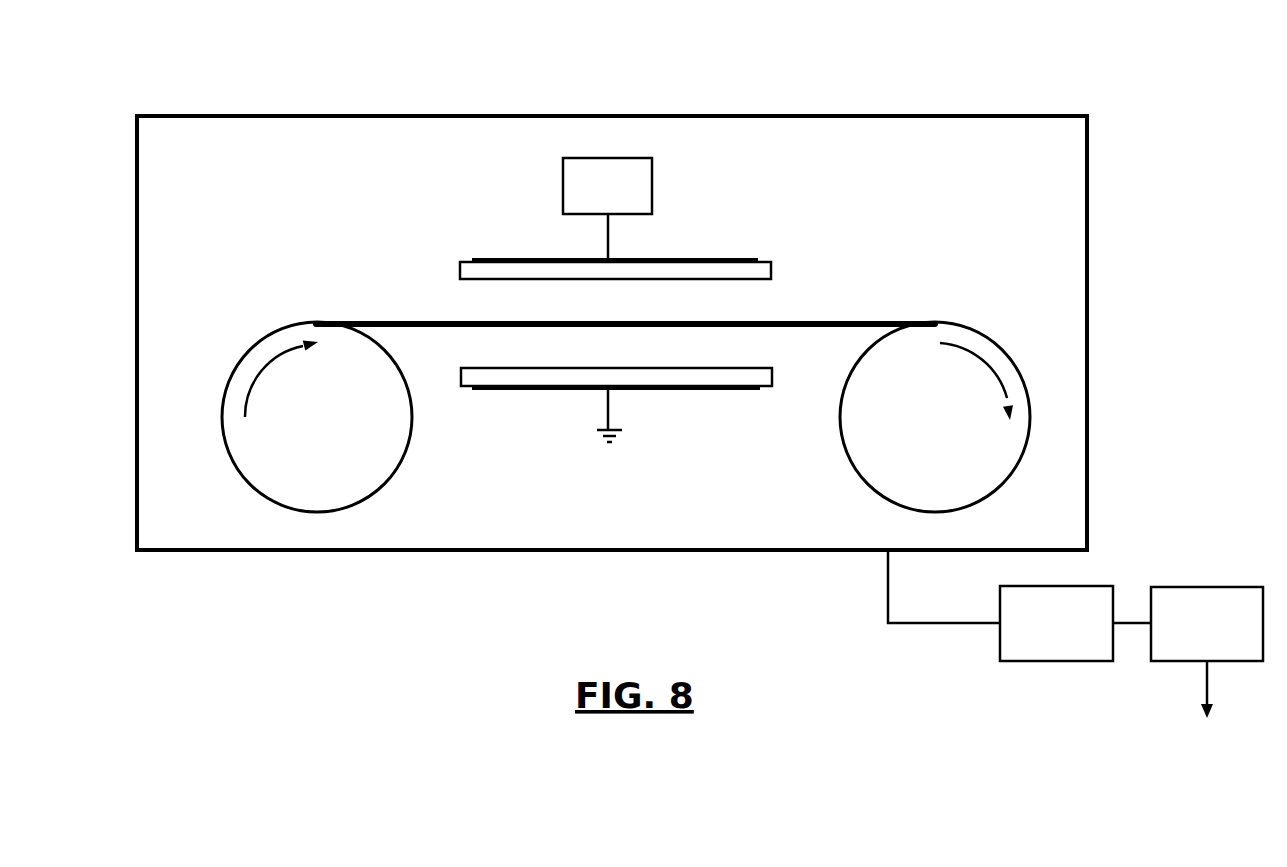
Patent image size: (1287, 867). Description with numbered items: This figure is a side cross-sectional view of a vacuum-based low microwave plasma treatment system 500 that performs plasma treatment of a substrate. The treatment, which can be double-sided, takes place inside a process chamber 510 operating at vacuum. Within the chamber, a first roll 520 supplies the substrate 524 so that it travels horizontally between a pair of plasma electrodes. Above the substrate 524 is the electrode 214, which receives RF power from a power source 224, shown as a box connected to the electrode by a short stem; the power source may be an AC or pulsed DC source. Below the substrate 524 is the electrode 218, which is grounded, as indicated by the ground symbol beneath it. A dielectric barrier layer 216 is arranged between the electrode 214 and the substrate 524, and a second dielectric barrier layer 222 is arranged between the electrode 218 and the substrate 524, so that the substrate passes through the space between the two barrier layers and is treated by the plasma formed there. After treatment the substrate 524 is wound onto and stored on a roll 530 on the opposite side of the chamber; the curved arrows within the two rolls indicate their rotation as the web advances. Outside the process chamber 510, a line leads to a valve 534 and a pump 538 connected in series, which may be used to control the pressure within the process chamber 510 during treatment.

The low microwave plasma treatment system 500 is at (247, 62).
The process chamber 510 is at (998, 115).
The power source 224 is at (602, 158).
The electrode 214 is at (667, 258).
The dielectric barrier layer 216 is at (768, 258).
The substrate 524 is at (368, 322).
The first roll 520 is at (283, 326).
The roll 530 is at (968, 328).
The dielectric barrier layer 222 is at (762, 388).
The electrode 218 is at (651, 390).
The valve 534 is at (1092, 586).
The pump 538 is at (1193, 587).